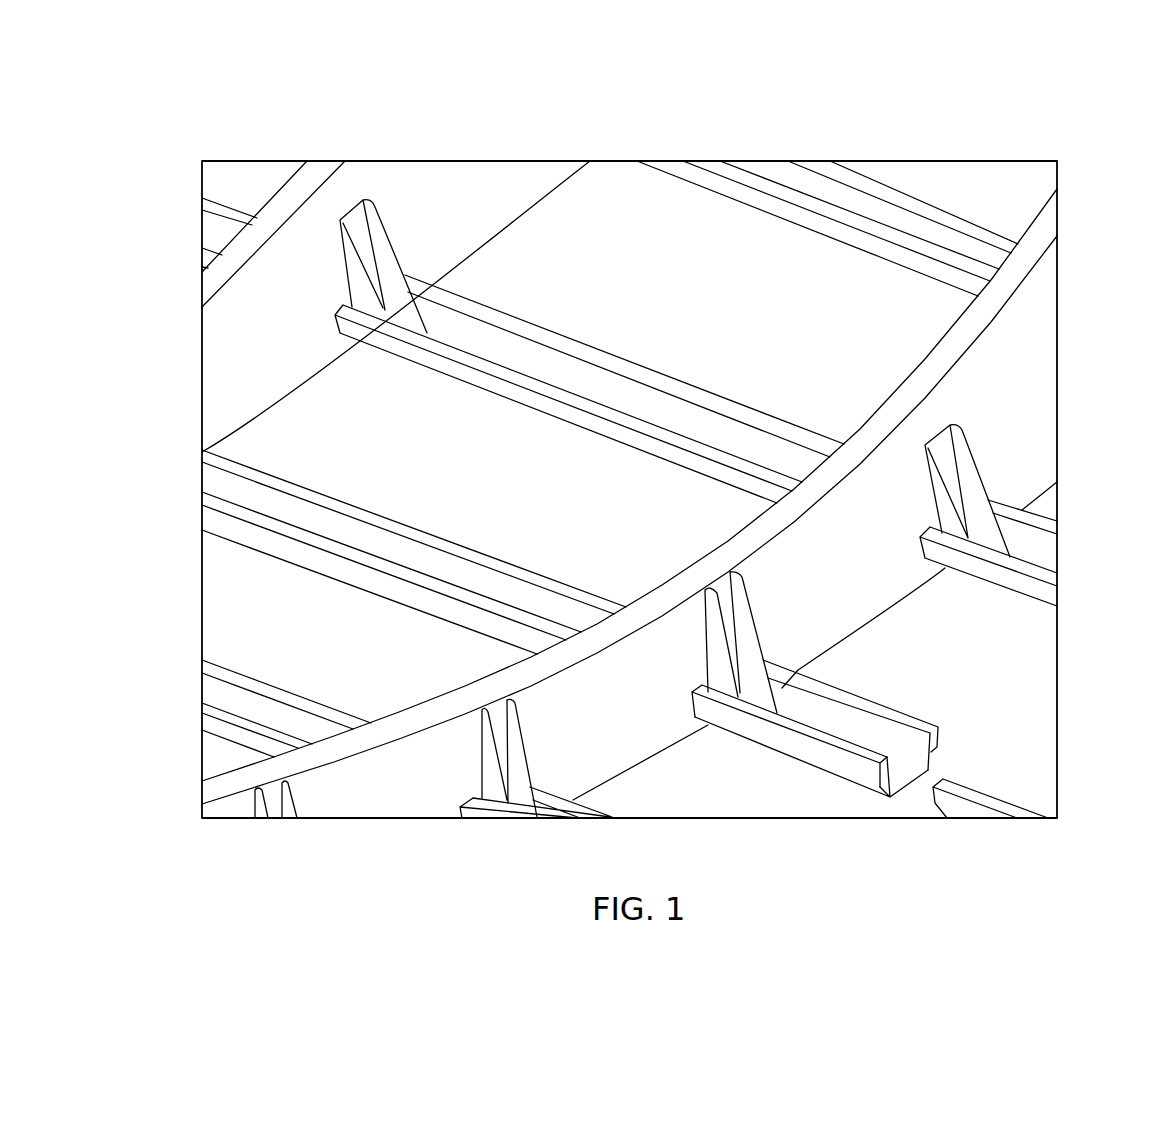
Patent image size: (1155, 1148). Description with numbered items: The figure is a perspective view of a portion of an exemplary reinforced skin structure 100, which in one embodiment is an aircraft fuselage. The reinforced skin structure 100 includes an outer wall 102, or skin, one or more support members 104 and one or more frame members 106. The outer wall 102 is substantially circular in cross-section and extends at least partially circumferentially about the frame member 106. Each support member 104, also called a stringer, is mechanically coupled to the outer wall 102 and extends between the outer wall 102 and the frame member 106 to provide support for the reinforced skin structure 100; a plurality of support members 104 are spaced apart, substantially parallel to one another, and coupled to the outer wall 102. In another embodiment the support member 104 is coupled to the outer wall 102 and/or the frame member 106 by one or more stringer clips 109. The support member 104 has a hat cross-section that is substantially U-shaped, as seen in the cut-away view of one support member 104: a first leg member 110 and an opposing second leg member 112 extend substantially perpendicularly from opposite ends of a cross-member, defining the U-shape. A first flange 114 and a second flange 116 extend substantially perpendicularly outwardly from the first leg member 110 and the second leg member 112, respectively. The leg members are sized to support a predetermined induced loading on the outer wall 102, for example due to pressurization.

The reinforced skin structure 100 is at (945, 121).
The outer wall 102 is at (229, 603).
The support member 104 is at (423, 347).
The frame member 106 is at (224, 309).
The stringer clip 109 is at (947, 447).
The first leg member 110 is at (915, 752).
The second leg member 112 is at (915, 777).
The first flange 114 is at (907, 718).
The second flange 116 is at (872, 756).